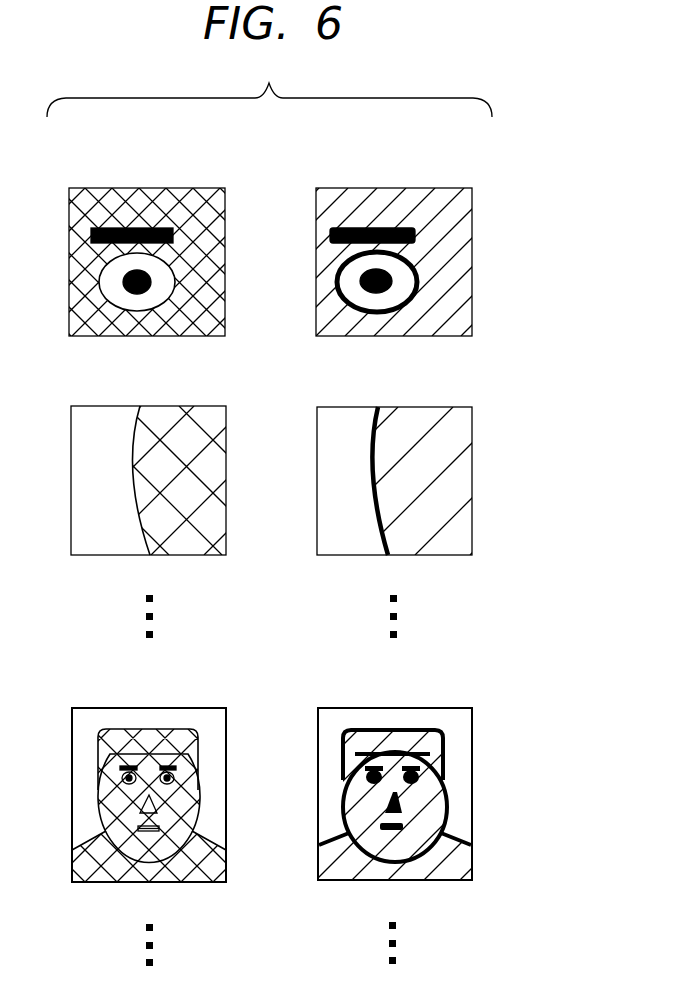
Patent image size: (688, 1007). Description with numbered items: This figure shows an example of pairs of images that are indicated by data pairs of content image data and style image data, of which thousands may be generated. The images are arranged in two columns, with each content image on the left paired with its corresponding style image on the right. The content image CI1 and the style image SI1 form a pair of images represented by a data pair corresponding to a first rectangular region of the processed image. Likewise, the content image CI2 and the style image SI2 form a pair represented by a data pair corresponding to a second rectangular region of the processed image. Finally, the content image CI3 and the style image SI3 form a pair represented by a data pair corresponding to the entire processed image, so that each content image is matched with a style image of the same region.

The content image CI1 is at (170, 188).
The style image SI1 is at (410, 188).
The content image CI2 is at (167, 406).
The style image SI2 is at (413, 407).
The content image CI3 is at (178, 708).
The style image SI3 is at (410, 708).